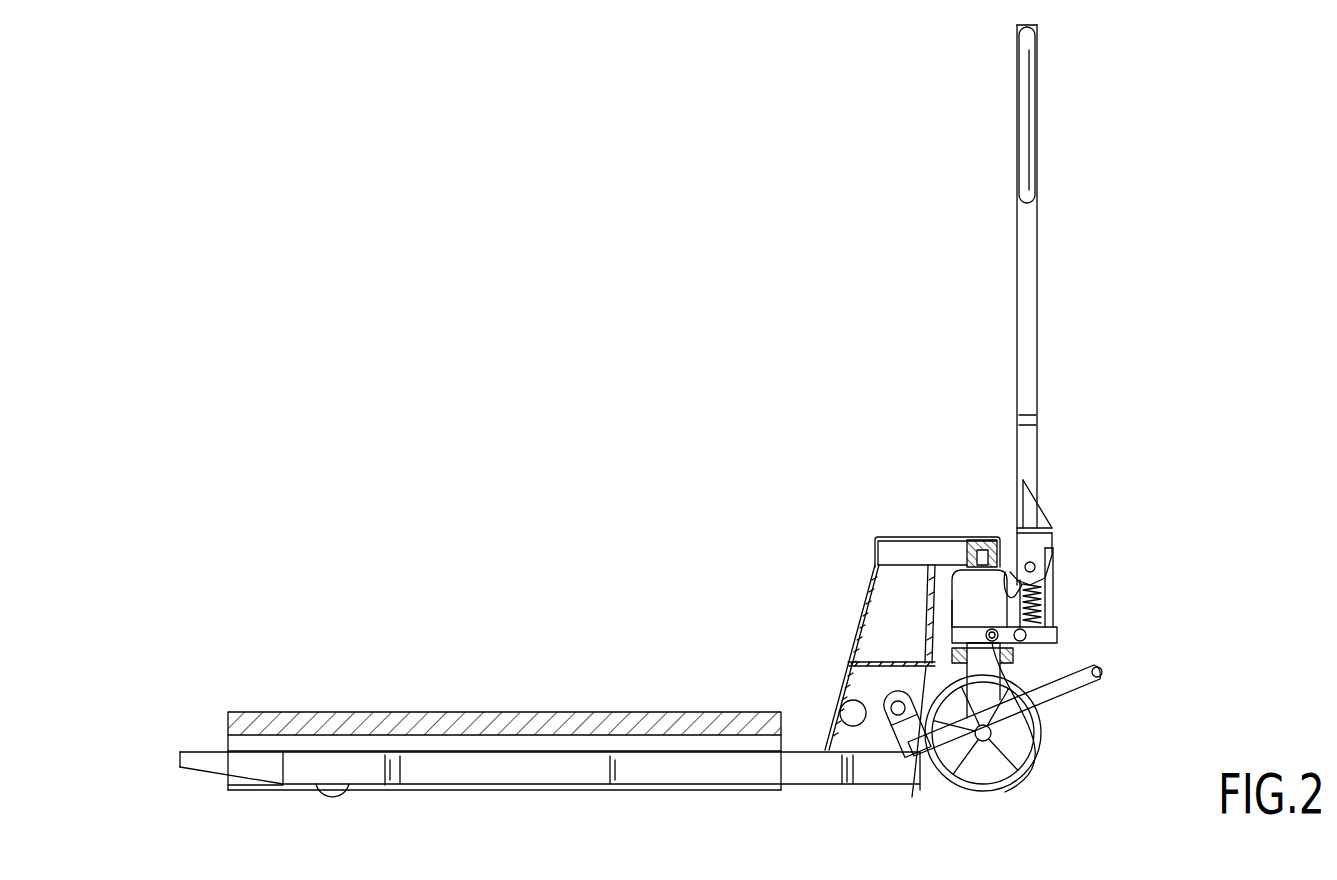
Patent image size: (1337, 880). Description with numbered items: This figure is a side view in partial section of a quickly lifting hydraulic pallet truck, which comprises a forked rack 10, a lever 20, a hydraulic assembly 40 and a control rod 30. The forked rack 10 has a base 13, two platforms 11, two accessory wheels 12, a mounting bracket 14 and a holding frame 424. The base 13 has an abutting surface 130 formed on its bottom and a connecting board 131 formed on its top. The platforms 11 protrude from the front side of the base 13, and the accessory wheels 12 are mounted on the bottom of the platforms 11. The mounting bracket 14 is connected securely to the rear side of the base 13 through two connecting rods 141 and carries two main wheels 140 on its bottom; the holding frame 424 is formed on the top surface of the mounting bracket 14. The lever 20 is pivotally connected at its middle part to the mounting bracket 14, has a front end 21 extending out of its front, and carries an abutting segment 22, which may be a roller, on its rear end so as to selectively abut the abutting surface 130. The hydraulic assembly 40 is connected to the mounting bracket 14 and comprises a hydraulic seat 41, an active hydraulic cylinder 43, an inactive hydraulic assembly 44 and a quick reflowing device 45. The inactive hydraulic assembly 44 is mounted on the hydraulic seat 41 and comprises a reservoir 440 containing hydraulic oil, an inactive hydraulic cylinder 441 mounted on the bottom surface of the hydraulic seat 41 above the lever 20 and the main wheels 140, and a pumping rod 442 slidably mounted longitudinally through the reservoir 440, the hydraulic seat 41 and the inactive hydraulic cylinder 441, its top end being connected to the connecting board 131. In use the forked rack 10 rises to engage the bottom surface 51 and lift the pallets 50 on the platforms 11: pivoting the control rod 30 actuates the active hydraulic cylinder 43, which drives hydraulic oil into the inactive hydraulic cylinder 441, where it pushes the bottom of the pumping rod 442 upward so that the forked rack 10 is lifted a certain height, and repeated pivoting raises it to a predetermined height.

The forked rack 10 is at (510, 746).
The platforms 11 is at (580, 778).
The accessory wheels 12 is at (333, 786).
The base 13 is at (862, 607).
The abutting surface 130 is at (880, 665).
The connecting board 131 is at (893, 535).
The mounting bracket 14 is at (1013, 662).
The main wheels 140 is at (983, 777).
The connecting rods 141 is at (912, 760).
The lever 20 is at (1055, 703).
The front end 21 is at (1100, 677).
The abutting segment 22 is at (890, 718).
The control rod 30 is at (1043, 283).
The hydraulic assembly 40 is at (1080, 585).
The hydraulic seat 41 is at (1050, 635).
The holding frame 424 is at (1053, 607).
The active hydraulic cylinder 43 is at (1047, 560).
The inactive hydraulic assembly 44 is at (943, 600).
The reservoir 440 is at (968, 583).
The inactive hydraulic cylinder 441 is at (980, 683).
The pumping rod 442 is at (977, 563).
The quick reflowing device 45 is at (1033, 750).
The pallets 50 is at (653, 708).
The bottom surface 51 is at (692, 737).